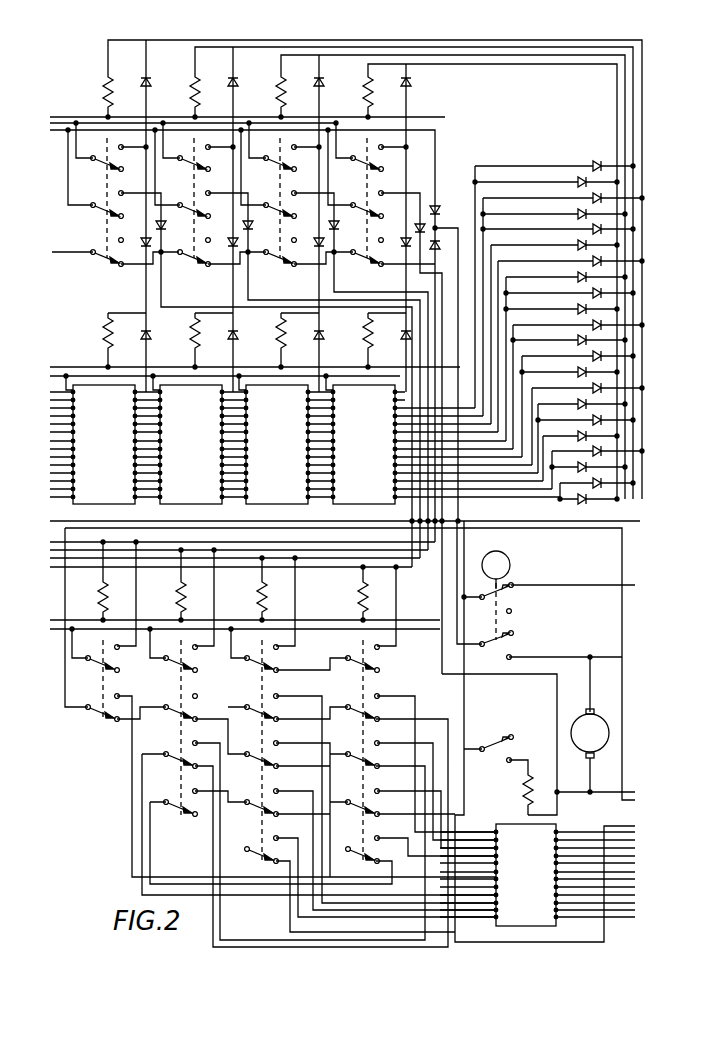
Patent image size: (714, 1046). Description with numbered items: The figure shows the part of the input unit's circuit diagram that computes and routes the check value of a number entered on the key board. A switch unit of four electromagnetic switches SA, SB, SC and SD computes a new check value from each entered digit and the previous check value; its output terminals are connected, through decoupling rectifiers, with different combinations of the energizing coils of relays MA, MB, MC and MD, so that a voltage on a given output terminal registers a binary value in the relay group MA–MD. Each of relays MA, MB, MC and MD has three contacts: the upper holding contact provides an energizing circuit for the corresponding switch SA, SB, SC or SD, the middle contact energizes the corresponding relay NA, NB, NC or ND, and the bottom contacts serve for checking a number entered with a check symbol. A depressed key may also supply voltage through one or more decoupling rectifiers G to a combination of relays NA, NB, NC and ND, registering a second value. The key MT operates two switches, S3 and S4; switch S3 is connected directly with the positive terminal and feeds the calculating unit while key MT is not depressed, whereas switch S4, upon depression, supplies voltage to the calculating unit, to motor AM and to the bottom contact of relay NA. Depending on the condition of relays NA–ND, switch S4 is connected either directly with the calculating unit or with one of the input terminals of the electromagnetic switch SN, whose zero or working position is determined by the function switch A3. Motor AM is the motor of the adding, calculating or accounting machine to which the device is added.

The relay MA is at (232, 303).
The relay MB is at (286, 302).
The relay MC is at (333, 302).
The relay MD is at (393, 369).
The electromagnetic switch SA is at (105, 439).
The electromagnetic switch SB is at (198, 439).
The electromagnetic switch SC is at (285, 439).
The electromagnetic switch SD is at (442, 439).
The decoupling rectifiers G is at (598, 163).
The relay NA is at (283, 708).
The relay NB is at (319, 747).
The relay NC is at (362, 744).
The relay ND is at (414, 714).
The key MT is at (512, 553).
The switch S3 is at (512, 597).
The switch S4 is at (512, 644).
The motor AM is at (590, 724).
The function switch A3 is at (490, 741).
The electromagnetic switch SN is at (537, 875).